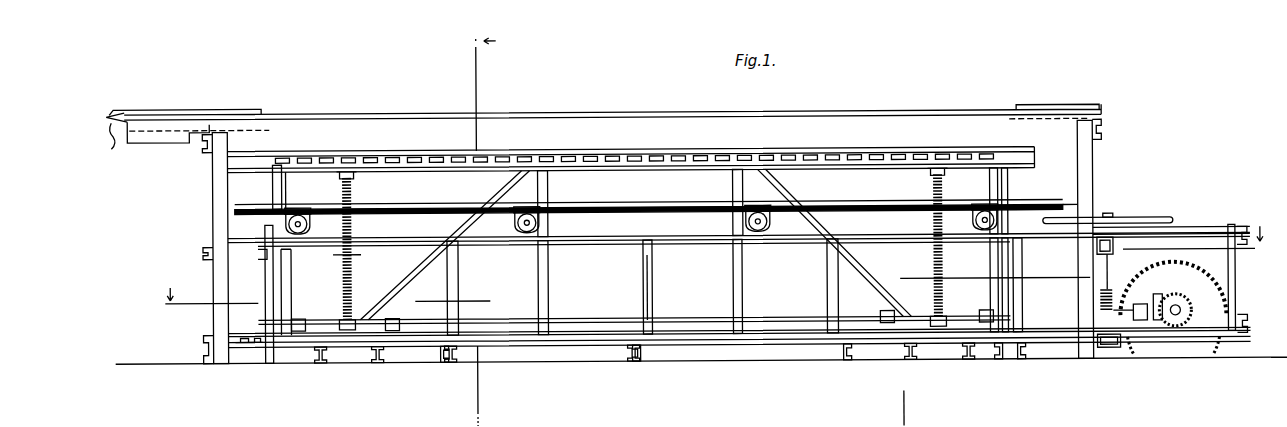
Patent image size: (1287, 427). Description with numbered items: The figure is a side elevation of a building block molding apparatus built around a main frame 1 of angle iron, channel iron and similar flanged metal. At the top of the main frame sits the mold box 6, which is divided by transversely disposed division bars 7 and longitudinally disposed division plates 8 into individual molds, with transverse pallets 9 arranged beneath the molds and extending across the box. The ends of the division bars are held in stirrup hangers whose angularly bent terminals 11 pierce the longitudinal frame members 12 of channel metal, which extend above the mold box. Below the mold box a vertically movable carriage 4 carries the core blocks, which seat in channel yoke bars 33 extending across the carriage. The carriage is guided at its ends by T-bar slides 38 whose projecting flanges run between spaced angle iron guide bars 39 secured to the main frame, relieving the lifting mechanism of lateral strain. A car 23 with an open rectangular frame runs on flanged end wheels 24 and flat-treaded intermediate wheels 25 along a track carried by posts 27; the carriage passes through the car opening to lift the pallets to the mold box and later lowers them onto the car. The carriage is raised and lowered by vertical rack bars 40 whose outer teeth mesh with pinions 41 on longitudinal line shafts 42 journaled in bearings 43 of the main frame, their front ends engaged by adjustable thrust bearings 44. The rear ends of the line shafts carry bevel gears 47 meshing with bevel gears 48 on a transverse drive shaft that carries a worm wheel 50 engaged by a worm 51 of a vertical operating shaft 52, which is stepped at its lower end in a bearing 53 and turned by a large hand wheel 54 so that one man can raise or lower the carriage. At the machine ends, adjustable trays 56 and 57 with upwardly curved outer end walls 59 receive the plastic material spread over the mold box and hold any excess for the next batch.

The main frame 1 is at (1105, 181).
The vertically movable carriage 4 is at (433, 172).
The mold box 6 is at (327, 299).
The division bars 7 is at (1081, 252).
The division plates 8 is at (484, 223).
The pallets 9 is at (767, 150).
The angularly bent terminals 11 is at (906, 399).
The longitudinal frame members 12 is at (697, 112).
The car 23 is at (633, 202).
The end wheels 24 is at (310, 236).
The intermediate wheels 25 is at (520, 236).
The posts 27 is at (458, 282).
The channel yoke bars 33 is at (690, 163).
The slides 38 is at (272, 185).
The guide bars 39 is at (272, 279).
The rack bars 40 is at (354, 272).
The pinions 41 is at (350, 340).
The line shafts 42 is at (580, 320).
The bearings 43 is at (884, 314).
The thrust bearings 44 is at (255, 346).
The bevel gears 47 is at (1160, 326).
The bevel gears 48 is at (1195, 305).
The worm wheel 50 is at (1173, 307).
The worm 51 is at (1100, 299).
The operating shaft 52 is at (1105, 264).
The bearing 53 is at (1116, 350).
The hand wheel 54 is at (1147, 220).
The front tray 56 is at (180, 112).
The rear tray 57 is at (1055, 105).
The outer end walls 59 is at (112, 144).